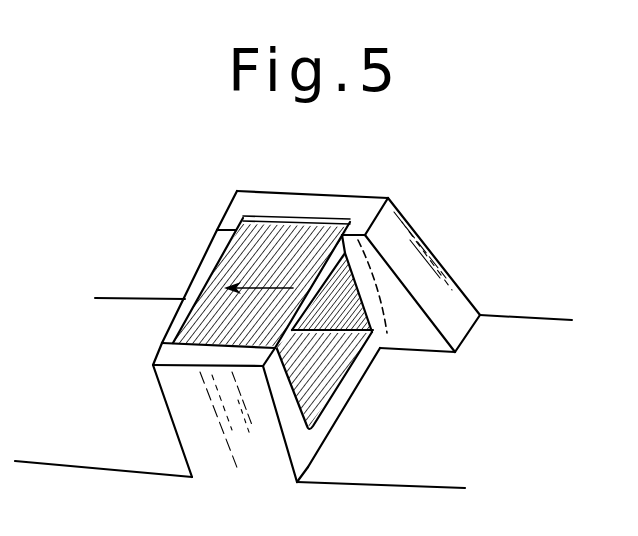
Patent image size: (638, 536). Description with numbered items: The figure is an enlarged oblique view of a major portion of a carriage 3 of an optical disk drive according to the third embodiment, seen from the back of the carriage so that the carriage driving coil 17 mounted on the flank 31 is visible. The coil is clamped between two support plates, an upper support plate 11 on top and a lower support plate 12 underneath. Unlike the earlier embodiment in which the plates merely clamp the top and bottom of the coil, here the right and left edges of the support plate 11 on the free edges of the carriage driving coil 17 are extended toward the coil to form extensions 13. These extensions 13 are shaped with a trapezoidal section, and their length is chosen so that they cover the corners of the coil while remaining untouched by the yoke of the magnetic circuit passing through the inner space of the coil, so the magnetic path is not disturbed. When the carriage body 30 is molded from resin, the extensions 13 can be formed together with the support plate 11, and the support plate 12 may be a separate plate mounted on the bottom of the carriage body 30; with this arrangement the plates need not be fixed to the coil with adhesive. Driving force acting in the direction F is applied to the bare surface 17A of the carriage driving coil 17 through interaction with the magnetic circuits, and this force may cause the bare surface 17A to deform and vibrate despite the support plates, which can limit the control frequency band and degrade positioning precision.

The carriage 3 is at (418, 204).
The support plate 11 is at (310, 192).
The support plate 12 is at (190, 397).
The extension 13 is at (212, 245).
The carriage driving coil 17 is at (320, 366).
The bare surface 17A is at (260, 238).
The carriage body 30 is at (143, 298).
The flank 31 is at (503, 352).
The direction of driving force F is at (230, 289).